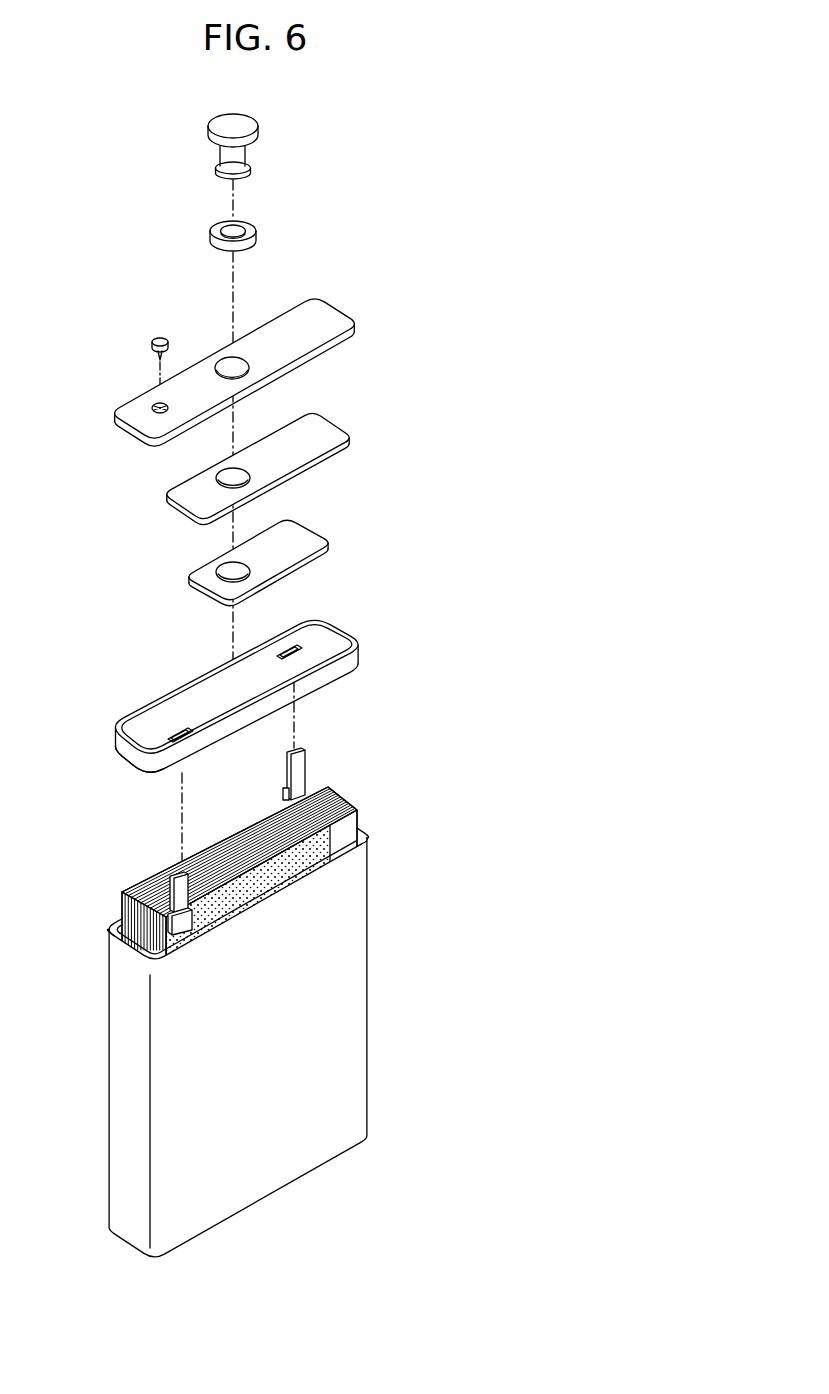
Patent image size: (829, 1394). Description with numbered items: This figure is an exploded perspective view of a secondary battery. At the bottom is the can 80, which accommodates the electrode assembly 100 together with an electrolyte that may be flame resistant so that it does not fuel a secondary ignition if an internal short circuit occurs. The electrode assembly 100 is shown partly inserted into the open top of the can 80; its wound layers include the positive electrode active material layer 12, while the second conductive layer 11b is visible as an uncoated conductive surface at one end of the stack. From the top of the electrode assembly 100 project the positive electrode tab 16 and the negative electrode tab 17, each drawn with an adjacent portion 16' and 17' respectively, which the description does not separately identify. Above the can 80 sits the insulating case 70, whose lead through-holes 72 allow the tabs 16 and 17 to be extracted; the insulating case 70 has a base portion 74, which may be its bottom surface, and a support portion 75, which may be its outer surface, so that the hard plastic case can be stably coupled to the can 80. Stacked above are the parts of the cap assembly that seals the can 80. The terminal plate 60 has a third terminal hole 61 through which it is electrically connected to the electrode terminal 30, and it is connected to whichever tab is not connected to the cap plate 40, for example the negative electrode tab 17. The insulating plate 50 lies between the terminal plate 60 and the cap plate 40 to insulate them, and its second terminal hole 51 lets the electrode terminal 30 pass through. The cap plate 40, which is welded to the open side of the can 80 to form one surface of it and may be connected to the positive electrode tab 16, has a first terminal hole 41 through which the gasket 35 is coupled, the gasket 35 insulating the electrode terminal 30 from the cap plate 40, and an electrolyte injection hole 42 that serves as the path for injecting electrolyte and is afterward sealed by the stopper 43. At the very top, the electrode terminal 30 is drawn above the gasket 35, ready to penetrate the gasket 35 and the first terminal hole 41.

The electrode assembly 100 is at (462, 775).
The electrode terminal 30 is at (246, 127).
The gasket 35 is at (212, 226).
The cap plate 40 is at (389, 310).
The first terminal hole 41 is at (228, 366).
The electrolyte injection hole 42 is at (154, 405).
The stopper 43 is at (152, 340).
The insulating plate 50 is at (384, 437).
The second terminal hole 51 is at (214, 483).
The terminal plate 60 is at (356, 529).
The third terminal hole 61 is at (218, 576).
The insulating case 70 is at (97, 704).
The lead through-holes 72 is at (282, 648).
The base portion 74 is at (327, 644).
The support portion 75 is at (122, 753).
The positive electrode active material layer 12 is at (353, 818).
The second conductive layer 11b is at (346, 842).
The positive electrode tab 16 is at (336, 752).
The first electrode tab base 16' is at (336, 764).
The negative electrode tab 17 is at (120, 884).
The second electrode tab base 17' is at (120, 914).
The can 80 is at (358, 1045).